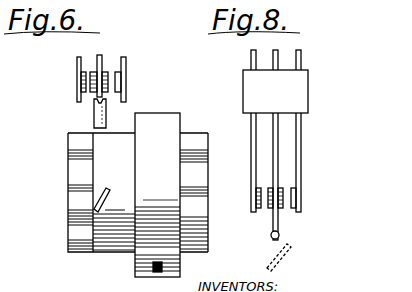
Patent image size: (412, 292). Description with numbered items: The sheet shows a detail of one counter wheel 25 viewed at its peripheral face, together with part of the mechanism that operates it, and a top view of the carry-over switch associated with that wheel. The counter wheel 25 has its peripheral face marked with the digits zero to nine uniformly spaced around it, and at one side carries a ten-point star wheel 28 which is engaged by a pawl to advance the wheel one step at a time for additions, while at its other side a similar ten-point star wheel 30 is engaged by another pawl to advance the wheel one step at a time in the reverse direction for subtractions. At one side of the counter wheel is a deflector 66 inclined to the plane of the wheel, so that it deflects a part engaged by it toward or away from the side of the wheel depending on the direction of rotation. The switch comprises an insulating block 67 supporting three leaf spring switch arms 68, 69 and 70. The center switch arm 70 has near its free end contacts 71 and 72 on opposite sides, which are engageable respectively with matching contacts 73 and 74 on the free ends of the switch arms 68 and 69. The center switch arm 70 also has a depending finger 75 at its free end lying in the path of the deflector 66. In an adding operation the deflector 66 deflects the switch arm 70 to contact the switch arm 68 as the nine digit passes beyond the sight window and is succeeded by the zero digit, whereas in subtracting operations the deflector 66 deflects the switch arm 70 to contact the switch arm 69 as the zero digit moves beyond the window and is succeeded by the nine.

In FIG. 6, the counter wheel 25 is at (170, 113).
In FIG. 6, the star wheel 28 is at (70, 150).
In FIG. 6, the star wheel 30 is at (199, 131).
In FIG. 6, the deflector 66 is at (94, 200).
In FIG. 8, the deflector 66 is at (289, 262).
In FIG. 8, the insulating block 67 is at (325, 57).
In FIG. 6, the switch arm 68 is at (78, 58).
In FIG. 8, the switch arm 68 is at (251, 142).
In FIG. 6, the switch arm 69 is at (126, 80).
In FIG. 8, the switch arm 69 is at (301, 143).
In FIG. 6, the switch arm 70 is at (100, 56).
In FIG. 8, the switch arm 70 is at (278, 160).
In FIG. 6, the contact 71 is at (93, 96).
In FIG. 8, the contact 71 is at (268, 208).
In FIG. 6, the contact 72 is at (94, 73).
In FIG. 8, the contact 72 is at (273, 208).
In FIG. 6, the contact 73 is at (82, 79).
In FIG. 8, the contact 73 is at (256, 182).
In FIG. 6, the contact 74 is at (108, 75).
In FIG. 8, the contact 74 is at (283, 195).
In FIG. 6, the depending finger 75 is at (106, 112).
In FIG. 8, the depending finger 75 is at (279, 236).